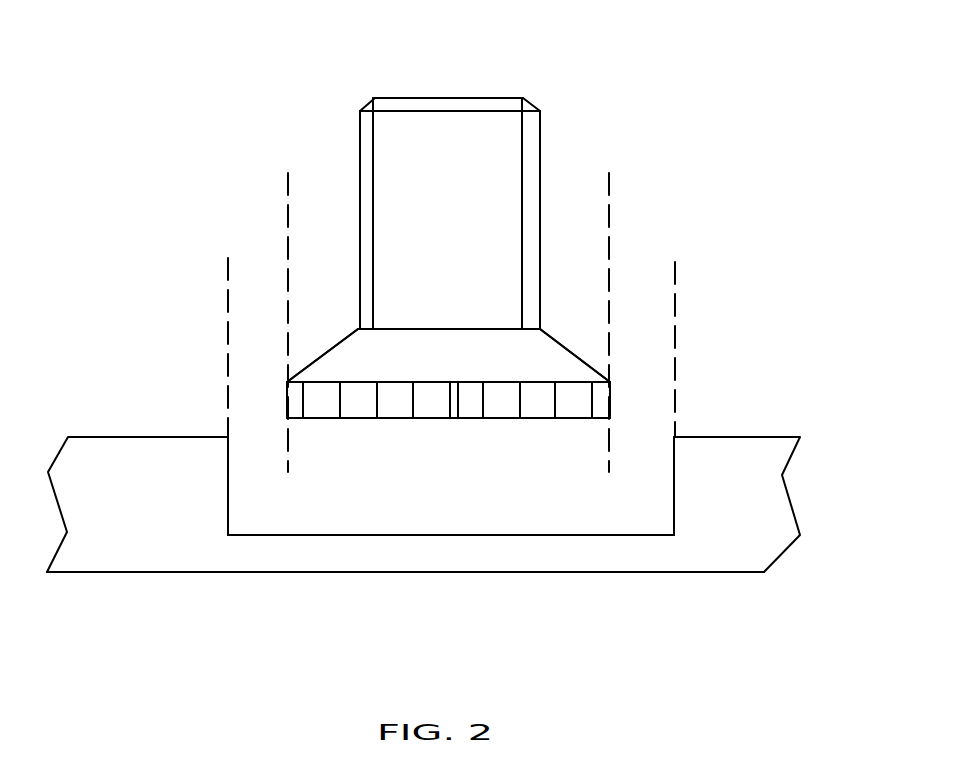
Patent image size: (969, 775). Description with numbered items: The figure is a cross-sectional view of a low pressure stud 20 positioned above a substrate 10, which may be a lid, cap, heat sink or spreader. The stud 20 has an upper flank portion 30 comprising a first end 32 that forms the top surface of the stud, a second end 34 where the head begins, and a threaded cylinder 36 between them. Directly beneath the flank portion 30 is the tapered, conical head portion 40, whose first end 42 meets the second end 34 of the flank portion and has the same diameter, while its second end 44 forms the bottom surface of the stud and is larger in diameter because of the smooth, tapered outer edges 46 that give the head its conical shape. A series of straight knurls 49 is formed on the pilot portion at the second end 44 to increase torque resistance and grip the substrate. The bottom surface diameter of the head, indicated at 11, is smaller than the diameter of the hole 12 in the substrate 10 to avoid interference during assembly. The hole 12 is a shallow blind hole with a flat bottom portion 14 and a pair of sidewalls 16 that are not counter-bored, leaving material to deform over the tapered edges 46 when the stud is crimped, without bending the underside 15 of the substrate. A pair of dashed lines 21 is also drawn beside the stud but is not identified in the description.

The substrate 10 is at (738, 573).
The bottom surface diameter of the head portion 11 is at (228, 298).
The hole 12 is at (247, 447).
The flat bottom portion 14 is at (372, 534).
The underside of the substrate 15 is at (235, 580).
The sidewalls 16 is at (229, 510).
The low pressure stud 20 is at (588, 80).
The flange boundary lines 21 is at (288, 222).
The flank portion 30 is at (458, 226).
The first end 32 is at (421, 97).
The second end 34 is at (400, 328).
The threaded cylinder 36 is at (359, 205).
The head portion 40 is at (438, 369).
The first end 42 is at (478, 331).
The second end 44 is at (450, 420).
The smooth tapered outer edges 46 is at (317, 357).
The straight knurls 49 is at (305, 400).